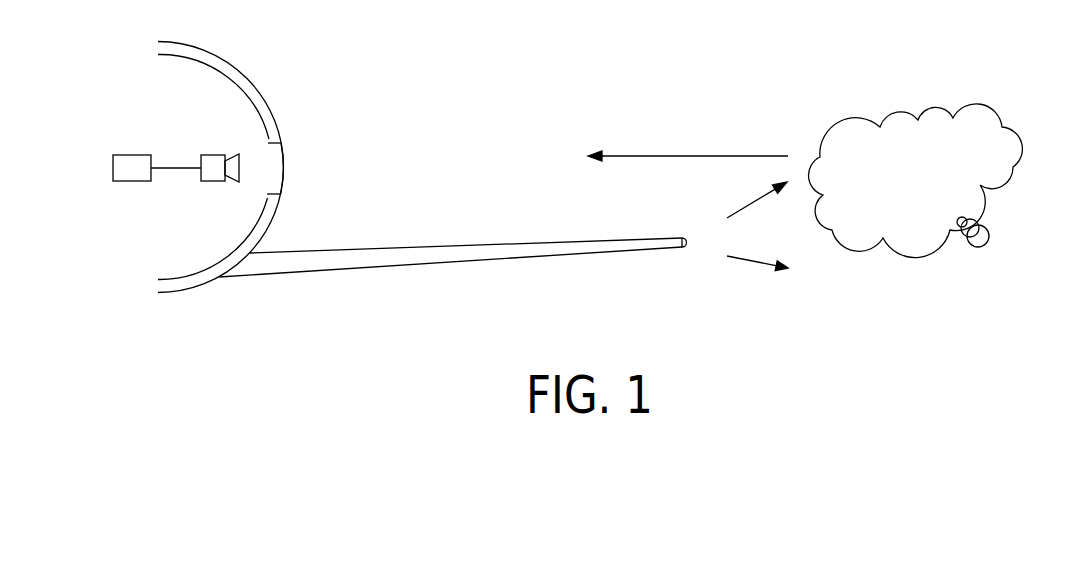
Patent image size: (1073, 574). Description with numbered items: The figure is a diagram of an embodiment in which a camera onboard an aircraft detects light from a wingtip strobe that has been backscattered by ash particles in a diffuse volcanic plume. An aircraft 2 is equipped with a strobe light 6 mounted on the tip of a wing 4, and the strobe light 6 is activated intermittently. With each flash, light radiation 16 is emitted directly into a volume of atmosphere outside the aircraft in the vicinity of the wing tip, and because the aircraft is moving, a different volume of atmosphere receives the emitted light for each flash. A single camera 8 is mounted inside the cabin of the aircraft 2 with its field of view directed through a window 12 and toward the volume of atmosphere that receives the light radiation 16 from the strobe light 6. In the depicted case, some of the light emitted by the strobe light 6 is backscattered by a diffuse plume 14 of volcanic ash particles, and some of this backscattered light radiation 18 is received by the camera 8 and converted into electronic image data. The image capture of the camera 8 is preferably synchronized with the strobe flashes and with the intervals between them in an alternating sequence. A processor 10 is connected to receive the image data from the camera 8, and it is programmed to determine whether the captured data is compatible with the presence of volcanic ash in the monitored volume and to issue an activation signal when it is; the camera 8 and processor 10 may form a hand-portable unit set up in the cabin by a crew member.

The aircraft 2 is at (238, 68).
The wing 4 is at (388, 242).
The strobe light 6 is at (688, 243).
The camera 8 is at (207, 181).
The processor 10 is at (138, 155).
The window 12 is at (288, 168).
The diffuse plume 14 is at (877, 118).
The light radiation 16 is at (752, 205).
The backscattered light radiation 18 is at (667, 156).